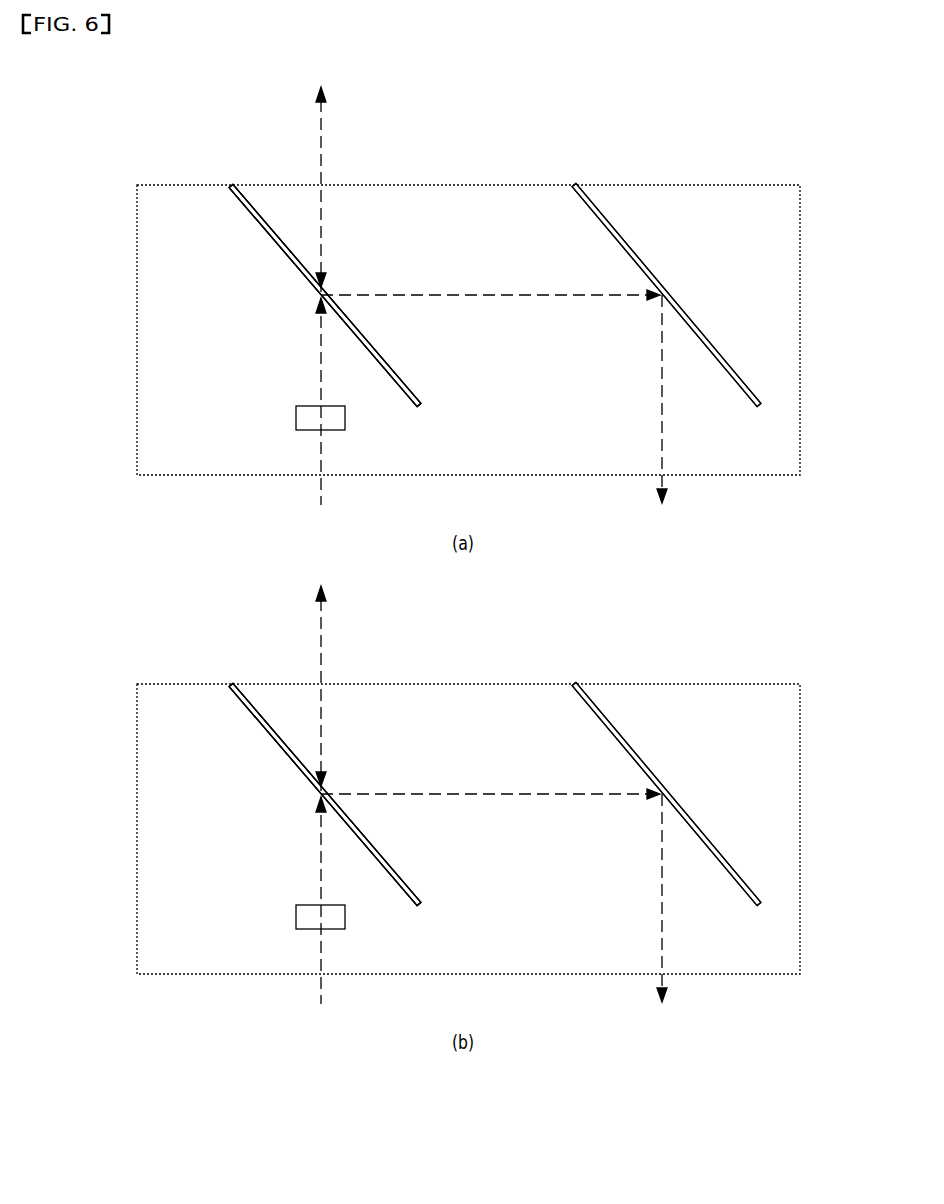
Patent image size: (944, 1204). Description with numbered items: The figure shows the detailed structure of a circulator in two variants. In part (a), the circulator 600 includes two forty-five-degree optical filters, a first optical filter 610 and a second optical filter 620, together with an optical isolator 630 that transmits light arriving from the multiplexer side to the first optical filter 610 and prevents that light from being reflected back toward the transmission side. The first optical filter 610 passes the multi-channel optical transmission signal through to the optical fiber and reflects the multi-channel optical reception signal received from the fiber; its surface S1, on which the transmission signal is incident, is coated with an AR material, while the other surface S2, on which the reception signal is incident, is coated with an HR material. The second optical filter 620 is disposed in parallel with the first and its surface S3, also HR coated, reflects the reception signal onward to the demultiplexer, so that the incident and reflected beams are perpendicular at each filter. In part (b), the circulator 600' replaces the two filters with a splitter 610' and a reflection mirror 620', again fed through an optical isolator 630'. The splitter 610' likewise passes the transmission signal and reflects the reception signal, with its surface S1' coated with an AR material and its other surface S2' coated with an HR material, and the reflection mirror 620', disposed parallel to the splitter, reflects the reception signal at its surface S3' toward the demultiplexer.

The circulator 600 is at (468, 303).
The first optical filter 610 is at (249, 295).
The second optical filter 620 is at (723, 294).
The optical isolator 630 is at (214, 414).
The surface of the first optical filter S1 is at (256, 295).
The other surface of the first optical filter S2 is at (325, 267).
The surface of the second optical filter S3 is at (666, 326).
The circulator 600' is at (468, 802).
The splitter 610' is at (248, 794).
The reflection mirror 620' is at (725, 793).
The optical isolator 630' is at (214, 913).
The surface of the splitter S1' is at (256, 794).
The other surface of the splitter S2' is at (325, 766).
The surface of the reflection mirror S3' is at (666, 825).